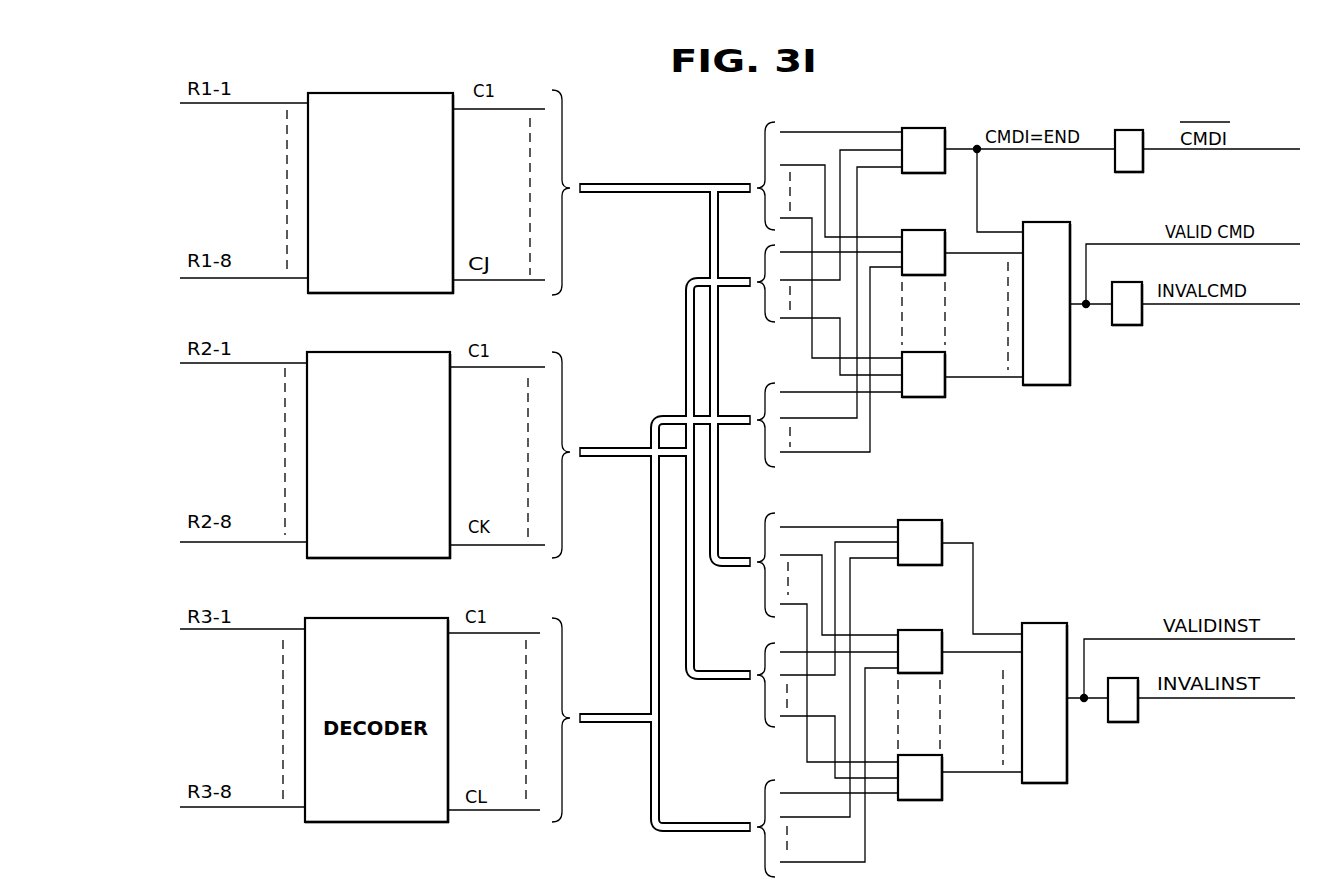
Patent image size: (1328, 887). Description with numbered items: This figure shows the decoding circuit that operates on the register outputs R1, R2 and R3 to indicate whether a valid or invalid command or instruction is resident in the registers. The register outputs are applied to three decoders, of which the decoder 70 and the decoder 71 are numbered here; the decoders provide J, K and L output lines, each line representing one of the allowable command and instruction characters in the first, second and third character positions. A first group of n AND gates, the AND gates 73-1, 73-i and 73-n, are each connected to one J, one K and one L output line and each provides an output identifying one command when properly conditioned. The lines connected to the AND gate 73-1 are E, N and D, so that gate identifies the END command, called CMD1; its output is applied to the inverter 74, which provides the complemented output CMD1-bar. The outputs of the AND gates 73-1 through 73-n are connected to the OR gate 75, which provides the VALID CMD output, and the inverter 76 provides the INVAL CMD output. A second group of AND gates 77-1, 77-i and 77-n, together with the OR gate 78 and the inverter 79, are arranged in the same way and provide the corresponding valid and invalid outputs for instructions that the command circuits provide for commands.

The decoder 70 is at (398, 92).
The decoder 71 is at (388, 352).
The AND gate 73-1 is at (928, 128).
The AND gate 73-i is at (922, 230).
The AND gate 73-n is at (925, 397).
The inverter 74 is at (1130, 130).
The OR gate 75 is at (1040, 222).
The inverter 76 is at (1125, 282).
The AND gate 77-1 is at (922, 520).
The AND gate 77-i is at (915, 630).
The AND gate 77-n is at (920, 800).
The OR gate 78 is at (1045, 623).
The inverter 79 is at (1130, 722).